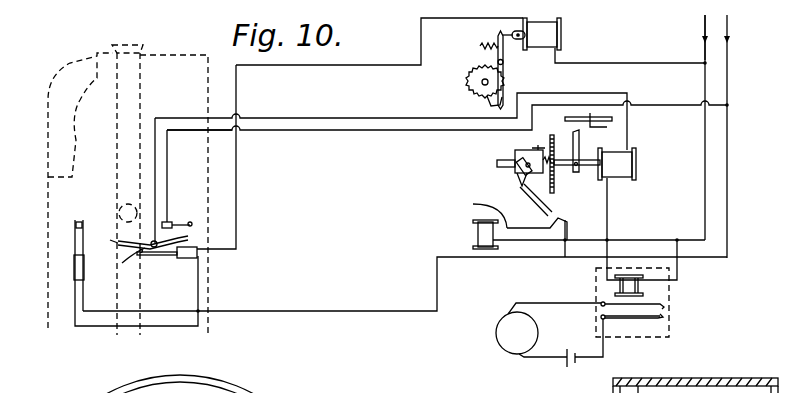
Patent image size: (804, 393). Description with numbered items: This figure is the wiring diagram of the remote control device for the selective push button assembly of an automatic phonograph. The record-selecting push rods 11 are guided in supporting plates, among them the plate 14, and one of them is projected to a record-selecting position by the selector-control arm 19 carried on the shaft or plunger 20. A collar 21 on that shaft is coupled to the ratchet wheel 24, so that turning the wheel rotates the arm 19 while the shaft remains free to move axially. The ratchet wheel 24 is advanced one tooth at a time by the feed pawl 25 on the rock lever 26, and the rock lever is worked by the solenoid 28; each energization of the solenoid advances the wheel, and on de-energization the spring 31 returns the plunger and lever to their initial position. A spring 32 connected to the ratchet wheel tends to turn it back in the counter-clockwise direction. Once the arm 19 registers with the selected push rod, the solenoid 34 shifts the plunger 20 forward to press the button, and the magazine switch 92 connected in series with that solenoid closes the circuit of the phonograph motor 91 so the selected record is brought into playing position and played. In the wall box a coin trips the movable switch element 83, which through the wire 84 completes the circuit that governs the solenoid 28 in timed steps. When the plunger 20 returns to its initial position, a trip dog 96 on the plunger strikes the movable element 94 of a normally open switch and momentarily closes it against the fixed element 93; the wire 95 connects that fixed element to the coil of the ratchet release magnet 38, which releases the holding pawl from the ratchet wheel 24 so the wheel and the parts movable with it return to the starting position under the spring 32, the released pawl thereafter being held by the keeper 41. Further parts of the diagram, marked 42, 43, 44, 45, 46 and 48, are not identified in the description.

The record-selecting push rods 11 is at (576, 119).
The supporting plate 14 is at (604, 128).
The selector-control arm 19 is at (560, 163).
The shaft or plunger 20 is at (589, 168).
The collar 21 is at (519, 151).
The ratchet wheel 24 is at (470, 80).
The feed pawl 25 is at (489, 105).
The rock lever 26 is at (505, 50).
The solenoid 28 is at (542, 34).
The spring 31 is at (494, 46).
The spring 32 is at (155, 258).
The solenoid 34 is at (617, 164).
The ratchet release magnet 38 is at (475, 234).
The keeper 41 is at (83, 239).
The contact arm 42 is at (105, 241).
The lever 43 is at (188, 238).
The conductor 44 is at (366, 107).
The conductor 45 is at (357, 133).
The supply conductor 46 is at (48, 200).
The supply conductor 48 is at (702, 39).
The movable switch element 83 is at (124, 264).
The wire 84 is at (145, 326).
The motor 91 is at (549, 335).
The magazine switch 92 is at (665, 308).
The fixed switch element 93 is at (534, 200).
The movable switch element 94 is at (545, 201).
The wire 95 is at (475, 213).
The trip dog 96 is at (517, 178).